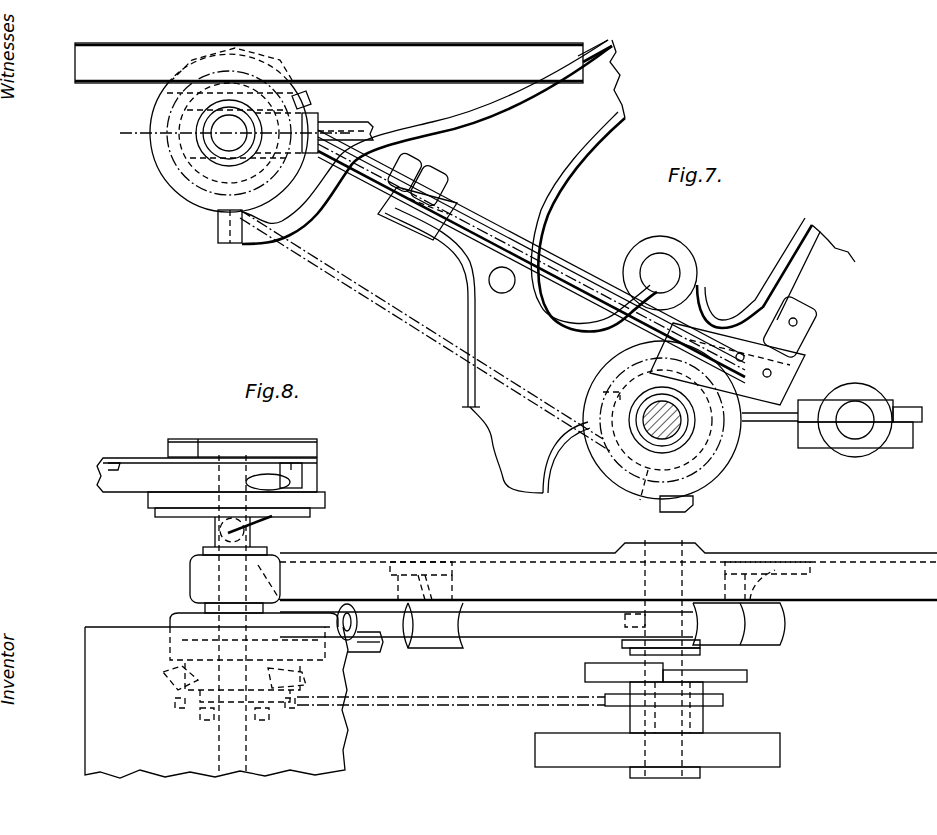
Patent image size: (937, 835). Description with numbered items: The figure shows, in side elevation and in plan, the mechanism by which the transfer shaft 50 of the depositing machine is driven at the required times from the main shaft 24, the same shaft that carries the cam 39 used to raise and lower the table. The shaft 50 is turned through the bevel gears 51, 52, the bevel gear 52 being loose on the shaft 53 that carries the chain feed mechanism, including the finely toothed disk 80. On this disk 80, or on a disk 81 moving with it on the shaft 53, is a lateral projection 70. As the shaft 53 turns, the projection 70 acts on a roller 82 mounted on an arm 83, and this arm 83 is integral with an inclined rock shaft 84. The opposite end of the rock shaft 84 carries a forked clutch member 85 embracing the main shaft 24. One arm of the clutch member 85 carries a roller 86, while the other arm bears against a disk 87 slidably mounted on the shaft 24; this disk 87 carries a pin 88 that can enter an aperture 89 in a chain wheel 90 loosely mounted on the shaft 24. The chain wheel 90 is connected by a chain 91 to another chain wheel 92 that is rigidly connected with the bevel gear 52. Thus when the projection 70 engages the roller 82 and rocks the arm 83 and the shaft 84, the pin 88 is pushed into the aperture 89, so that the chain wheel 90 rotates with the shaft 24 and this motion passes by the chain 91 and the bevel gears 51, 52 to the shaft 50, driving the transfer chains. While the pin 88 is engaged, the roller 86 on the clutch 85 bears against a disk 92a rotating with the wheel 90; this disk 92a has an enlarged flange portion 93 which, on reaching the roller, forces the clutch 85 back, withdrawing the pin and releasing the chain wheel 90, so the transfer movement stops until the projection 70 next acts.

In FIG. 7, the main shaft 24 is at (698, 432).
In FIG. 8, the main shaft 24 is at (678, 748).
In FIG. 8, the cam 39 is at (657, 755).
In FIG. 7, the shaft 50 is at (348, 127).
In FIG. 8, the shaft 50 is at (360, 640).
In FIG. 7, the bevel gear 51 is at (304, 103).
In FIG. 8, the bevel gear 51 is at (304, 676).
In FIG. 8, the bevel gear 52 is at (168, 672).
In FIG. 7, the shaft 53 is at (222, 135).
In FIG. 8, the shaft 53 is at (221, 743).
In FIG. 7, the lateral projection 70 is at (255, 78).
In FIG. 8, the lateral projection 70 is at (248, 529).
In FIG. 7, the finely toothed disk 80 is at (158, 126).
In FIG. 8, the finely toothed disk 80 is at (321, 497).
In FIG. 8, the disk 81 is at (309, 513).
In FIG. 7, the roller 82 is at (221, 216).
In FIG. 8, the roller 82 is at (216, 527).
In FIG. 7, the arm 83 is at (302, 224).
In FIG. 8, the arm 83 is at (287, 590).
In FIG. 7, the inclined rock shaft 84 is at (495, 238).
In FIG. 8, the inclined rock shaft 84 is at (525, 631).
In FIG. 7, the forked clutch member 85 is at (678, 360).
In FIG. 8, the forked clutch member 85 is at (627, 641).
In FIG. 7, the roller 86 is at (662, 492).
In FIG. 8, the roller 86 is at (697, 653).
In FIG. 8, the disk 87 is at (627, 636).
In FIG. 8, the pin 88 is at (668, 676).
In FIG. 8, the aperture 89 is at (664, 706).
In FIG. 7, the chain wheel 90 is at (696, 461).
In FIG. 8, the chain wheel 90 is at (618, 706).
In FIG. 7, the chain 91 is at (367, 291).
In FIG. 8, the chain 91 is at (455, 707).
In FIG. 7, the chain wheel 92 is at (190, 172).
In FIG. 8, the chain wheel 92 is at (268, 715).
In FIG. 7, the disk 92a is at (724, 431).
In FIG. 8, the disk 92a is at (747, 675).
In FIG. 7, the enlarged flange portion 93 is at (603, 392).
In FIG. 8, the enlarged flange portion 93 is at (600, 670).